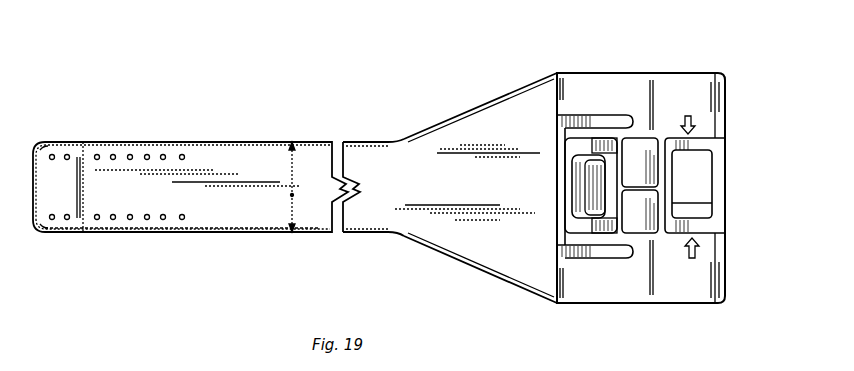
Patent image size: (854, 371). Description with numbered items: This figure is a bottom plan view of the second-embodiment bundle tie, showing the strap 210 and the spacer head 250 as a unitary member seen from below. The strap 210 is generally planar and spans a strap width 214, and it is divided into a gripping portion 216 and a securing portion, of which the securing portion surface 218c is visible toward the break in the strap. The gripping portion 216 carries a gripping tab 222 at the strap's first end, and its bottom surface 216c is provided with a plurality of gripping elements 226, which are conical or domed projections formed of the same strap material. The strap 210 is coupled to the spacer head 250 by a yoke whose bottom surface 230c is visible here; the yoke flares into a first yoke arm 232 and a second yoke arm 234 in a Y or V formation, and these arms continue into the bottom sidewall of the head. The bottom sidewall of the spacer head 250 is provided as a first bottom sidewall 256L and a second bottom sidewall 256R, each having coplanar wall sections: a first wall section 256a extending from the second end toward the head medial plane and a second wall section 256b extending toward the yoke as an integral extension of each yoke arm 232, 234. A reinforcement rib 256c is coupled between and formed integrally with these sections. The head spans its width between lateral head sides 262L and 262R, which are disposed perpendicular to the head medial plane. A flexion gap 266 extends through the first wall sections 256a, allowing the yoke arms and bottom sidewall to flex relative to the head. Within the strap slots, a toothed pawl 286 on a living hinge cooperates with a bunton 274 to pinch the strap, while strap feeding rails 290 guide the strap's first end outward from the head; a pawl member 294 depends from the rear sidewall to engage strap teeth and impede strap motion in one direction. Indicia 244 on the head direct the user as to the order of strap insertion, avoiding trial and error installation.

The strap 210 is at (223, 133).
The strap width 214 is at (292, 195).
The gripping portion 216 is at (103, 243).
The bottom surface of gripping portion 216c is at (122, 198).
The securing portion surface 218c is at (308, 160).
The gripping tab 222 is at (62, 187).
The gripping elements 226 is at (181, 221).
The bottom surface of yoke 230c is at (503, 250).
The first yoke arm 232 is at (423, 248).
The second yoke arm 234 is at (453, 113).
The indicia 244 is at (686, 98).
The spacer head 250 is at (754, 101).
The first wall section 256a is at (703, 117).
The second wall section 256b is at (595, 112).
The reinforcement rib 256c is at (667, 196).
The first bottom sidewall 256L is at (703, 252).
The second bottom sidewall 256R is at (705, 100).
The lateral head side 262L is at (690, 305).
The lateral head side 262R is at (650, 82).
The flexion gap 266 is at (598, 117).
The bunton 274 is at (698, 150).
The toothed pawl 286 is at (595, 182).
The strap feeding rails 290 is at (600, 147).
The pawl member 294 is at (692, 185).